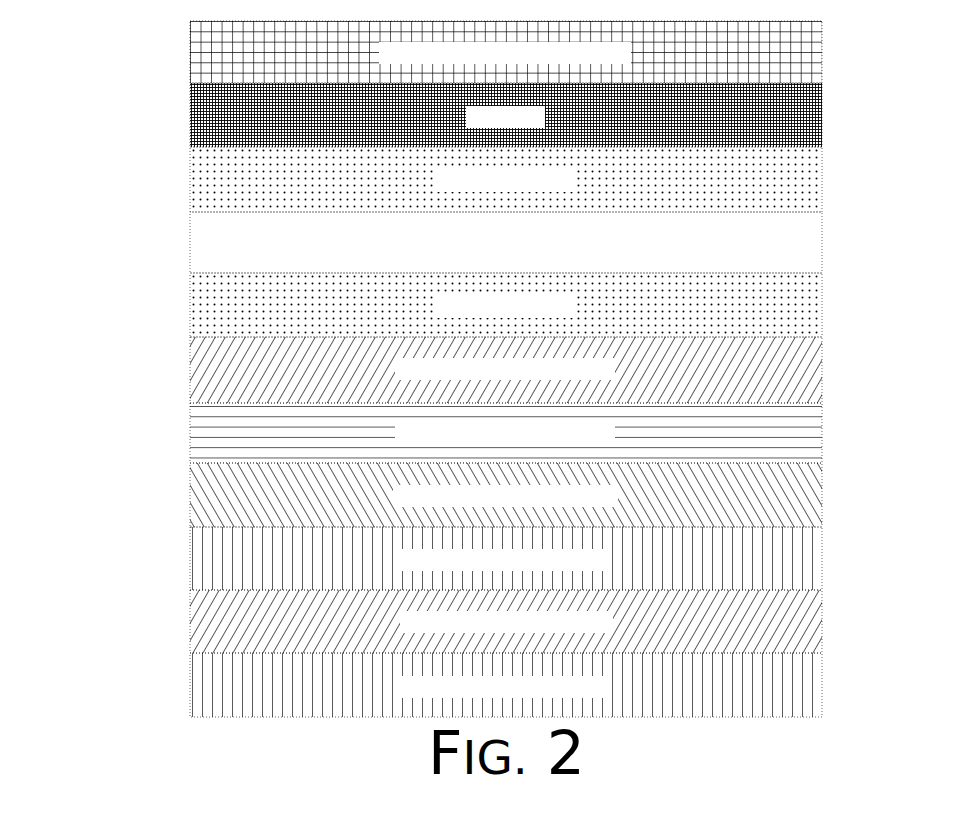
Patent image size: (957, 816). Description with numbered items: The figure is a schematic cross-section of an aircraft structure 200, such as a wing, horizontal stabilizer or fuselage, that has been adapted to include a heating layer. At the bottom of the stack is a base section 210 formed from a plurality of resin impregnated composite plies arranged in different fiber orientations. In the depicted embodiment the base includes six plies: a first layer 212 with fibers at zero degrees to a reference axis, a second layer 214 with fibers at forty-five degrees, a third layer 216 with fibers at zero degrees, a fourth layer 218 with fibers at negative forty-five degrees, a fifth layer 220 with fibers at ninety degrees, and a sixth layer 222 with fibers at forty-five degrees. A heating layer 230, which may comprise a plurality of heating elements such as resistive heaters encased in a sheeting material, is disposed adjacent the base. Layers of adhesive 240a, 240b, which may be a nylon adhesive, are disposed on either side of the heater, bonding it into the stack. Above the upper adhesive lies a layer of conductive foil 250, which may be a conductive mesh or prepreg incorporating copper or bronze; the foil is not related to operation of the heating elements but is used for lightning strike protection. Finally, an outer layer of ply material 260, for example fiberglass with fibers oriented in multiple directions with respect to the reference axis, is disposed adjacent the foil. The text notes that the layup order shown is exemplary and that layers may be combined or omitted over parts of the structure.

The aircraft structure 200 is at (141, 63).
The base section 210 is at (822, 337).
The first layer 212 is at (605, 696).
The second layer 214 is at (610, 631).
The third layer 216 is at (607, 569).
The fourth layer 218 is at (615, 505).
The fifth layer 220 is at (612, 441).
The sixth layer 222 is at (612, 378).
The heating layer 230 is at (562, 252).
The adhesive layer 240a is at (574, 316).
The adhesive layer 240b is at (574, 190).
The conductive foil 250 is at (542, 126).
The ply material 260 is at (628, 62).